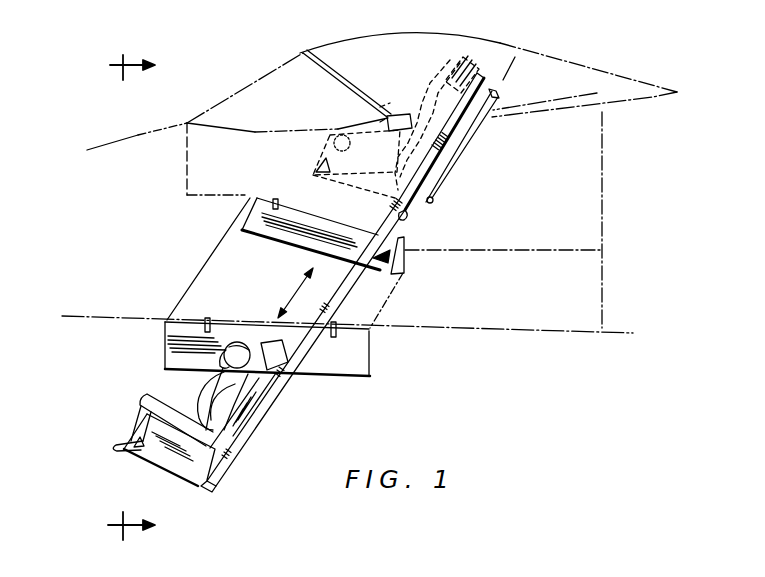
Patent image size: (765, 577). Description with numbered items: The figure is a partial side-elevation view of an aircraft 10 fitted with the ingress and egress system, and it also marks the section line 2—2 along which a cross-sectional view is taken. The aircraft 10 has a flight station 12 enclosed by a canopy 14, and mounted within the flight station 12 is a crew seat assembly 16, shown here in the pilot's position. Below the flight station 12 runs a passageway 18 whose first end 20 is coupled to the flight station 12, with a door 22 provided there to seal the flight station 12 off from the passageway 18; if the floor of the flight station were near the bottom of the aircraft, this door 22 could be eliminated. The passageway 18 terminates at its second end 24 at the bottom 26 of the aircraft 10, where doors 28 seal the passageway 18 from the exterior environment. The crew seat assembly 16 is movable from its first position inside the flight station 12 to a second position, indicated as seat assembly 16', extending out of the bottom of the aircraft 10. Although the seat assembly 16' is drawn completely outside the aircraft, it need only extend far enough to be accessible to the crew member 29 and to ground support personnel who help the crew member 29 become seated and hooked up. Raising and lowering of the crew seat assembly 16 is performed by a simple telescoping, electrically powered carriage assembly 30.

The section line 2— 2 is at (143, 304).
The aircraft 10 is at (665, 199).
The flight station 12 is at (264, 110).
The canopy 14 is at (328, 43).
The crew seat assembly 16 is at (433, 112).
The crew seat assembly in second position 16' is at (190, 420).
The passageway 18 is at (210, 262).
The first end 20 is at (255, 199).
The door 22 is at (250, 224).
The second end 24 is at (203, 291).
The bottom 26 is at (92, 318).
The doors 28 is at (165, 352).
The crew member 29 is at (130, 418).
The carriage assembly 30 is at (412, 240).